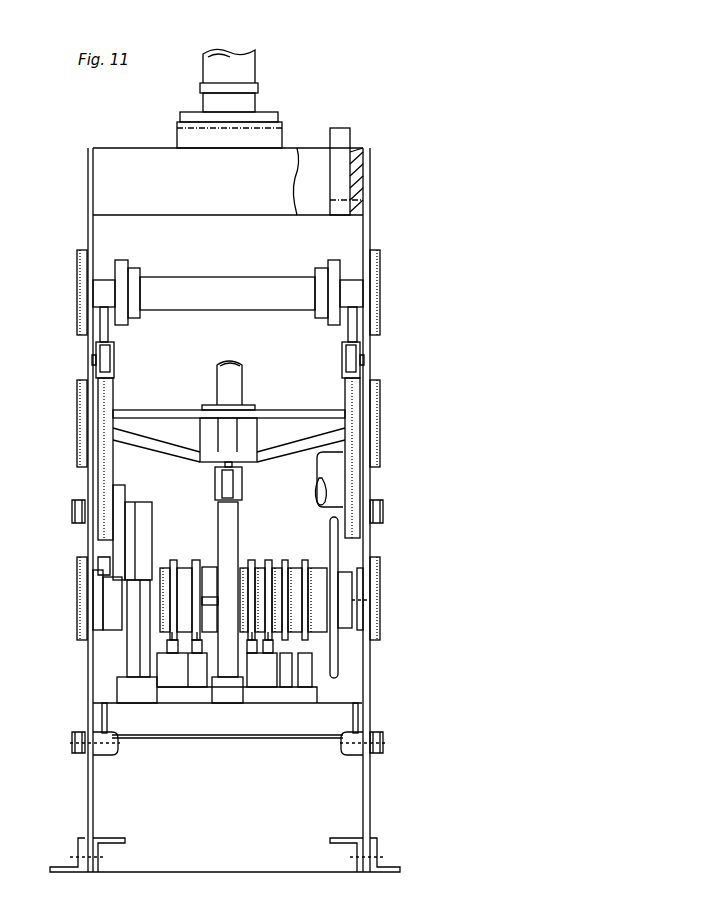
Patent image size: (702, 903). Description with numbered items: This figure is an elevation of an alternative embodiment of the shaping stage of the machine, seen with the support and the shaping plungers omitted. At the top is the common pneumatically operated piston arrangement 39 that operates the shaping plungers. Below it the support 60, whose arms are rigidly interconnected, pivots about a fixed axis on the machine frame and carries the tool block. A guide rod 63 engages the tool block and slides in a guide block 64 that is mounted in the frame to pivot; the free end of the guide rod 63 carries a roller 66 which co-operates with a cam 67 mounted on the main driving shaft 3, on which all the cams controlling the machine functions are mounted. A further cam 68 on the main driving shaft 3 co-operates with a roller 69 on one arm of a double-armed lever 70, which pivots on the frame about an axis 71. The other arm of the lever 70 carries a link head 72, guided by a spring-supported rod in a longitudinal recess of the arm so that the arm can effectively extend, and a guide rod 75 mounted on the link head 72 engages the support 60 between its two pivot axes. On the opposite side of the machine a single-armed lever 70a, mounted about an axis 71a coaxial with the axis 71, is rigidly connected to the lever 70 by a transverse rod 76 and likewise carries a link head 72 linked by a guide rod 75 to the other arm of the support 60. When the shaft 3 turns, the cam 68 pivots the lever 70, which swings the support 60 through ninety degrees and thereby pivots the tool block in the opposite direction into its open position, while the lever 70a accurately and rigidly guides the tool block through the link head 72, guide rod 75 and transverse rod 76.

The main driving shaft 3 is at (352, 592).
The pneumatically operated piston arrangement 39 is at (248, 101).
The support 60 is at (333, 272).
The guide rod 63 is at (237, 380).
The guide block 64 is at (210, 430).
The roller 66 is at (230, 483).
The cam 67 is at (230, 530).
The cam 68 is at (132, 645).
The roller 69 is at (135, 562).
The double-armed lever 70 is at (105, 468).
The single-armed lever 70a is at (348, 402).
The axis 71 is at (70, 510).
The axis 71a is at (382, 513).
The link head 72 is at (102, 378).
The guide rod 75 is at (105, 332).
The transverse rod 76 is at (335, 470).